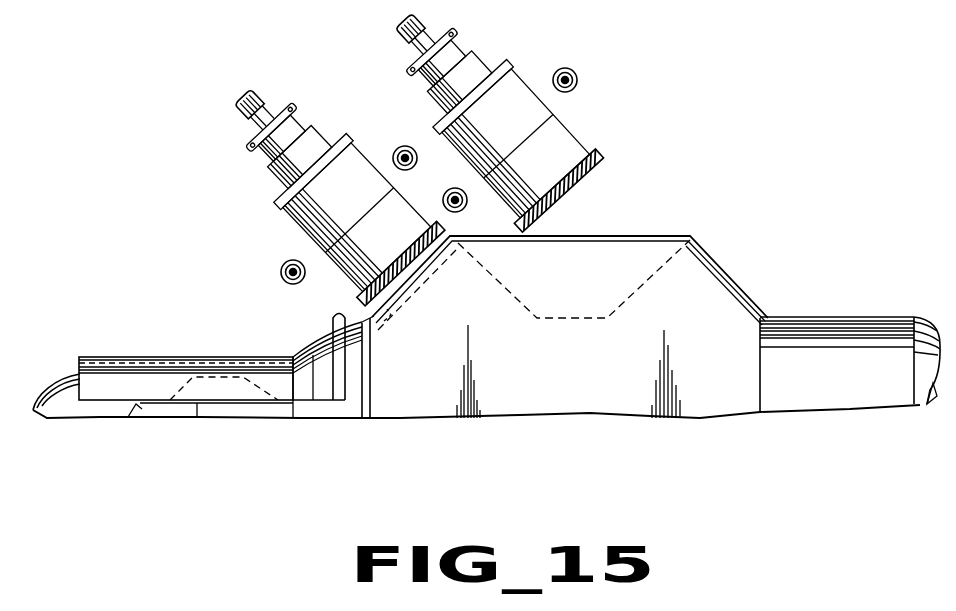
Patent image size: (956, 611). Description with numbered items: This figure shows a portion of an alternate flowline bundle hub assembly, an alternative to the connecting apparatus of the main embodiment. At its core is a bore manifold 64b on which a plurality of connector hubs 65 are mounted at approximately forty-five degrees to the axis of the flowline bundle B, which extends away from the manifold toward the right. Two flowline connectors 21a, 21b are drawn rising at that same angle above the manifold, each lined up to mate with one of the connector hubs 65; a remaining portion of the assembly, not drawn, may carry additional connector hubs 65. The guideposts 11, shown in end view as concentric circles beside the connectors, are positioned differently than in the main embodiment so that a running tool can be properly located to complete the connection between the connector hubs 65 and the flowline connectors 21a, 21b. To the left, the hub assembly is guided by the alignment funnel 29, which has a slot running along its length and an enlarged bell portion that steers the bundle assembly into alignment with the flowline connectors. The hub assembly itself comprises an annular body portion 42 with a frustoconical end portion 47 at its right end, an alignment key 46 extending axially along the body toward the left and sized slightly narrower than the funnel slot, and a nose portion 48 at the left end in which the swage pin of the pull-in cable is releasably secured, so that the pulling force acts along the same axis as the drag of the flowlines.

The guideposts 11 is at (578, 80).
The flowline connector 21a is at (300, 241).
The flowline connector 21b is at (574, 129).
The connector hubs 65 is at (366, 302).
The bore manifold 64b is at (700, 280).
The flowline bundle B is at (872, 324).
The alignment funnel 29 is at (158, 357).
The nose portion 48 is at (50, 414).
The alignment key 46 is at (180, 420).
The annular body portion 42 is at (255, 420).
The frustoconical end portion 47 is at (342, 424).